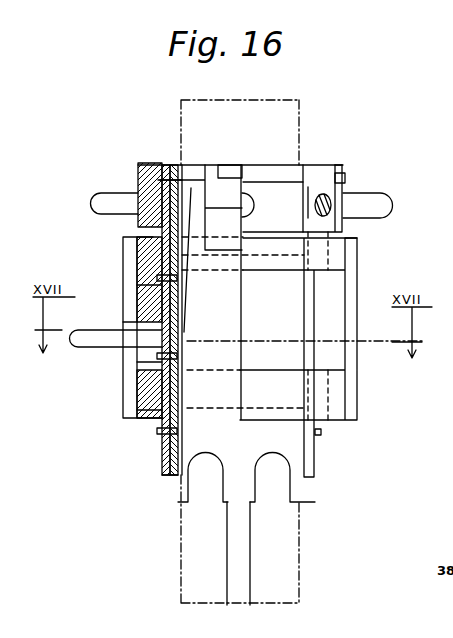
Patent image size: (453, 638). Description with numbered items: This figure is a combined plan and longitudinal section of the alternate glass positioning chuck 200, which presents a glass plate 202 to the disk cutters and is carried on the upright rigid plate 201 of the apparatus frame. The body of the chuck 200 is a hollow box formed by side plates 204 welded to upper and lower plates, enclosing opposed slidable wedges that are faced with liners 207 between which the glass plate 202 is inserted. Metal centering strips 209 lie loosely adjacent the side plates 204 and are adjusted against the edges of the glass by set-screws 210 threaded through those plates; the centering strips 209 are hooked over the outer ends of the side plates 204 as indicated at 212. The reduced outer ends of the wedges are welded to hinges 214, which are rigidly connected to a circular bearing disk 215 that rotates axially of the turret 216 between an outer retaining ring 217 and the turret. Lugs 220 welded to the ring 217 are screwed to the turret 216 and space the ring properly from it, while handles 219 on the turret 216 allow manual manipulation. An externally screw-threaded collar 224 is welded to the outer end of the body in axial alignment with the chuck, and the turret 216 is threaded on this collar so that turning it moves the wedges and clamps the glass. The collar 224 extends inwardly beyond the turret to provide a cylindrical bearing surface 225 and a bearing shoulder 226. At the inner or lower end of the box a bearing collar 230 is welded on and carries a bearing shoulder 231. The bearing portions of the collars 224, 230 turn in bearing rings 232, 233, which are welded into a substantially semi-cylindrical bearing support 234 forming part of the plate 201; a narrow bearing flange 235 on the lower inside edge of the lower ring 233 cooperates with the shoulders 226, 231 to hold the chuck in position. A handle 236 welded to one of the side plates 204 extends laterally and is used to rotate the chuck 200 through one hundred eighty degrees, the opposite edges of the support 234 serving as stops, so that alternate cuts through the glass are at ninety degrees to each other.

The glass positioning chuck 200 is at (326, 314).
The rigid plate 201 is at (248, 558).
The glass plate 202 is at (299, 517).
The side plates 204 is at (308, 457).
The liners 207 is at (220, 278).
The metal centering strips 209 is at (179, 319).
The set-screws 210 is at (321, 432).
The hooked ends of centering strips 212 is at (166, 188).
The hinges 214 is at (226, 175).
The circular bearing disk 215 is at (345, 178).
The turret 216 is at (90, 203).
The outer retaining ring 217 is at (338, 165).
The handles 219 is at (388, 208).
The lugs 220 is at (319, 172).
The externally screw-threaded collar 224 is at (138, 178).
The cylindrical bearing surface 225 is at (140, 251).
The bearing shoulder 226 is at (127, 238).
The bearing collar 230 is at (157, 389).
The bearing shoulder 231 is at (137, 403).
The bearing ring 232 is at (150, 268).
The bearing ring 233 is at (138, 368).
The semi-cylindrical bearing support 234 is at (358, 248).
The bearing flange 235 is at (152, 423).
The handle 236 is at (83, 342).